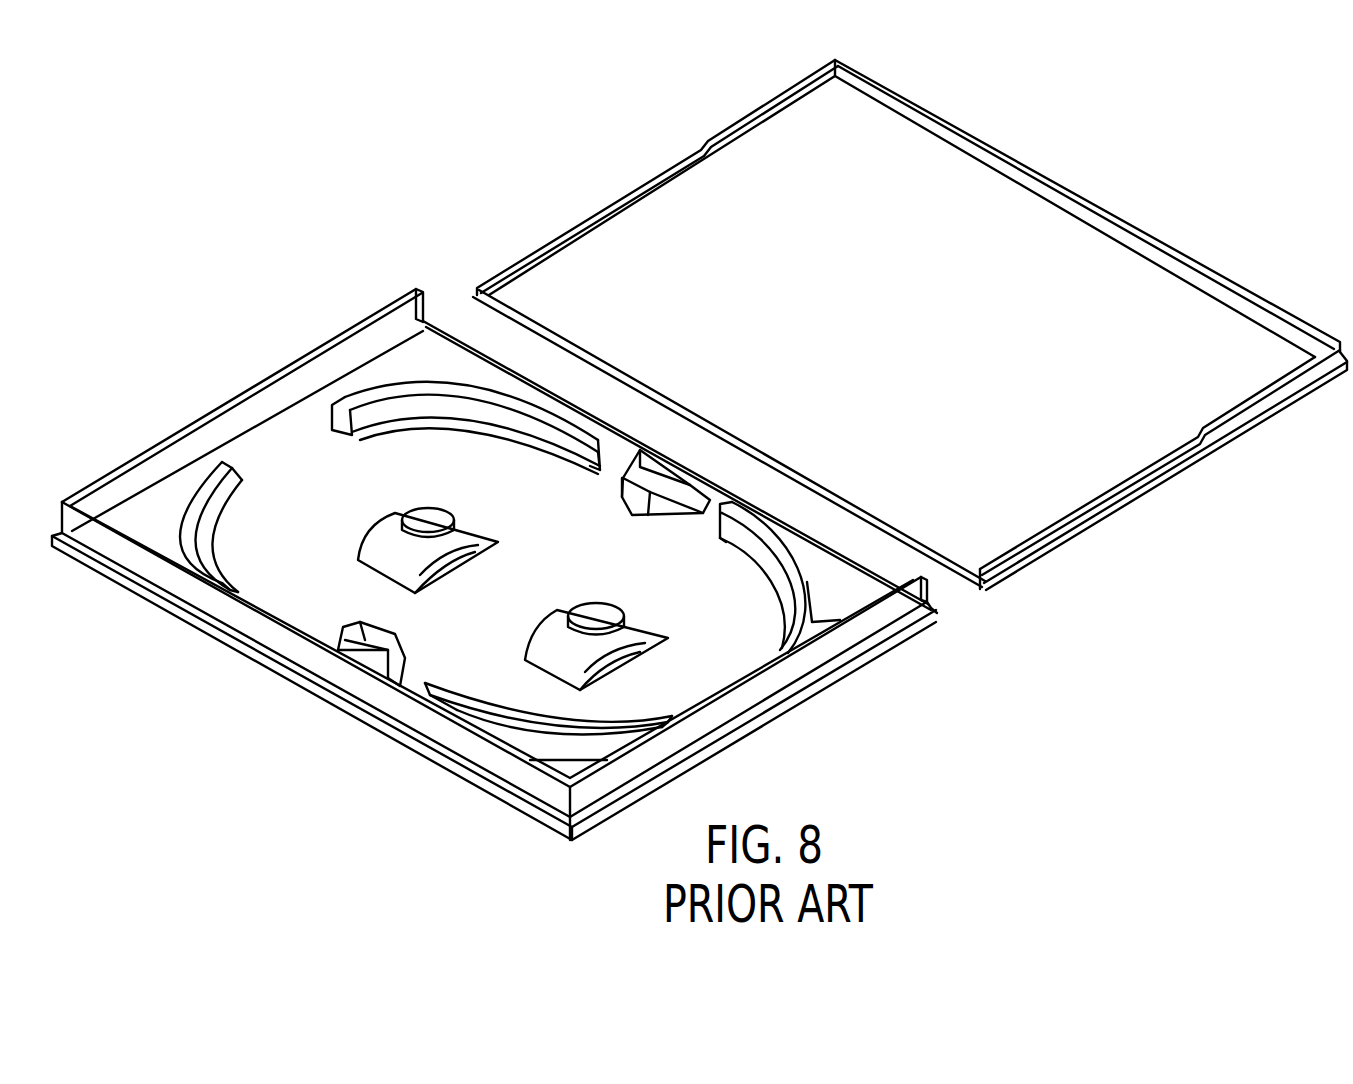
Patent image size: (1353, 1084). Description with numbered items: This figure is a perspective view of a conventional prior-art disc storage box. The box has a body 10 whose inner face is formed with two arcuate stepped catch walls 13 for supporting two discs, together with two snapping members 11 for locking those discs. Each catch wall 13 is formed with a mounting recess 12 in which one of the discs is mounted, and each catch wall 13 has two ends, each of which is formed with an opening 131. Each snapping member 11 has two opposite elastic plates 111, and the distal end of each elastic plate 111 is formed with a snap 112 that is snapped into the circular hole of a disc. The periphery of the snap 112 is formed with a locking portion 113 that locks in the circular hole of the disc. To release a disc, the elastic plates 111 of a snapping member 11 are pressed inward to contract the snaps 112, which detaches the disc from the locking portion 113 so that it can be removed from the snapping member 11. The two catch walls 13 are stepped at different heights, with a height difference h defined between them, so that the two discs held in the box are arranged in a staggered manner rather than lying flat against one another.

The body 10 is at (445, 290).
The snapping member 11 is at (422, 613).
The elastic plate 111 is at (382, 540).
The snap 112 is at (430, 506).
The locking portion 113 is at (455, 502).
The mounting recess 12 is at (245, 545).
The arcuate stepped catch wall 13 is at (402, 388).
The opening 131 is at (613, 472).
The height difference h is at (631, 455).